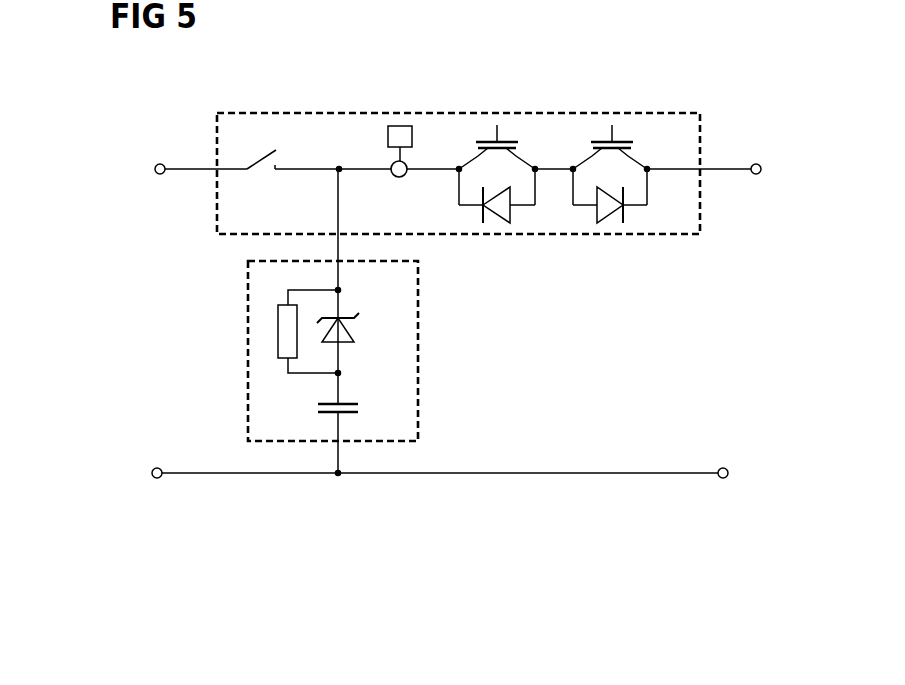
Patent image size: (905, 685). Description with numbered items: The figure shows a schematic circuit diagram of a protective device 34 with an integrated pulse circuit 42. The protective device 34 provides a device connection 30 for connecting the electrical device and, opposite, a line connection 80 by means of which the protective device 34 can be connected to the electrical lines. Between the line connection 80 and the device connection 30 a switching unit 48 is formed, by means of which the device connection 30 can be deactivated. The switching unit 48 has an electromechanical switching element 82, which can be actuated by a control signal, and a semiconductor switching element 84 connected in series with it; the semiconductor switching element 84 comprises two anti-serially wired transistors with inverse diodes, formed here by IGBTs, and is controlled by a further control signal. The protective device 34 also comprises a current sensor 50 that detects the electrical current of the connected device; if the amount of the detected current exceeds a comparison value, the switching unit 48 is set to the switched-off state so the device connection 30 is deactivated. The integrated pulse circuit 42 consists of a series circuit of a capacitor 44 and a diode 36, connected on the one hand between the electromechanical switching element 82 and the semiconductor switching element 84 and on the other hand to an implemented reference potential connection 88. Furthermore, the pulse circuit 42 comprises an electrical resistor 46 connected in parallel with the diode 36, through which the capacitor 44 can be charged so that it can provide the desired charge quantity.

The device connection 30 is at (729, 321).
The protective device 34 is at (733, 125).
The diode 36 is at (353, 330).
The pulse circuit 42 is at (315, 350).
The capacitor 44 is at (346, 401).
The electrical resistor 46 is at (278, 334).
The switching unit 48 is at (458, 136).
The current sensor 50 is at (400, 126).
The line connection 80 is at (158, 322).
The electromechanical switching element 82 is at (257, 156).
The semiconductor switching element 84 is at (560, 144).
The reference potential connection 88 is at (569, 473).